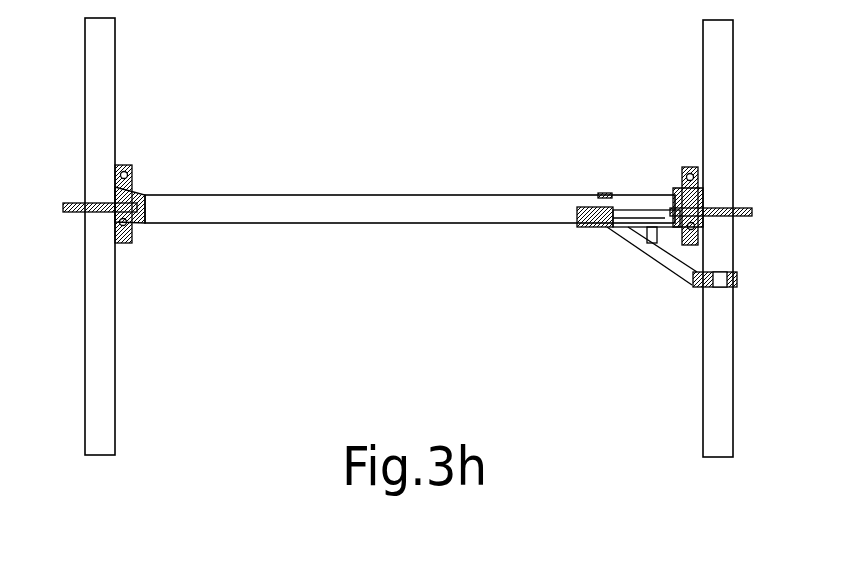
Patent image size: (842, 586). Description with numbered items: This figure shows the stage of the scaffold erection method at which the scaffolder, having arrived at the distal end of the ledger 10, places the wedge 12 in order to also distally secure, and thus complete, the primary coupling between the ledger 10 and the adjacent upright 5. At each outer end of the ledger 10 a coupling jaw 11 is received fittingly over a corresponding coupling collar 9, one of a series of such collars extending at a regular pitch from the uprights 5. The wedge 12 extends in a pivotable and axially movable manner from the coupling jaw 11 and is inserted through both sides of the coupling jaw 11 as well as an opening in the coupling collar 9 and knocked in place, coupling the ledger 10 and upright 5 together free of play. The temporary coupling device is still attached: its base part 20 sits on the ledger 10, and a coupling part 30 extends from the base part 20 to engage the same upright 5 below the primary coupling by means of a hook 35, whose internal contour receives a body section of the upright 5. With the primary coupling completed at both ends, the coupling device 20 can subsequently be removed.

The upright 5 is at (93, 340).
The coupling collar 9 is at (63, 207).
The ledger 10 is at (432, 208).
The coupling jaw 11 is at (148, 222).
The wedge 12 is at (135, 170).
The base part 20 is at (585, 207).
The coupling part 30 is at (650, 252).
The hook 35 is at (733, 275).